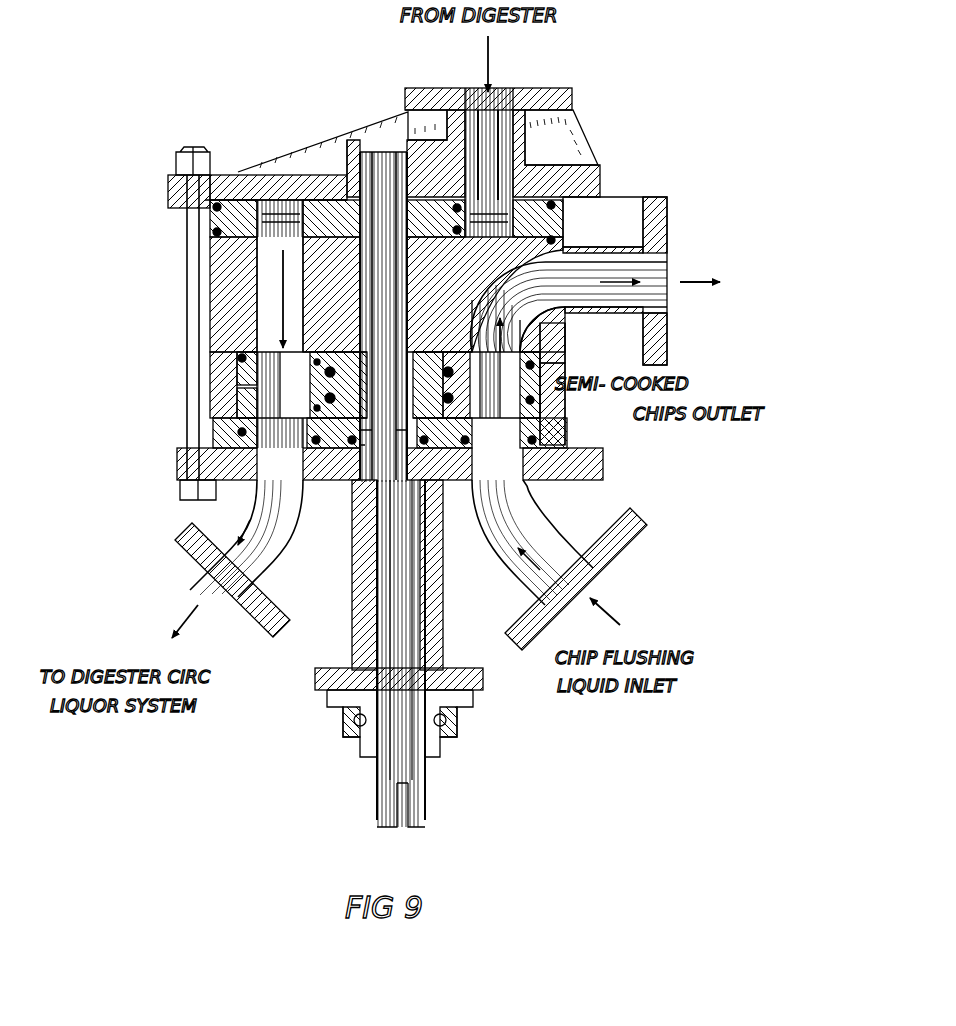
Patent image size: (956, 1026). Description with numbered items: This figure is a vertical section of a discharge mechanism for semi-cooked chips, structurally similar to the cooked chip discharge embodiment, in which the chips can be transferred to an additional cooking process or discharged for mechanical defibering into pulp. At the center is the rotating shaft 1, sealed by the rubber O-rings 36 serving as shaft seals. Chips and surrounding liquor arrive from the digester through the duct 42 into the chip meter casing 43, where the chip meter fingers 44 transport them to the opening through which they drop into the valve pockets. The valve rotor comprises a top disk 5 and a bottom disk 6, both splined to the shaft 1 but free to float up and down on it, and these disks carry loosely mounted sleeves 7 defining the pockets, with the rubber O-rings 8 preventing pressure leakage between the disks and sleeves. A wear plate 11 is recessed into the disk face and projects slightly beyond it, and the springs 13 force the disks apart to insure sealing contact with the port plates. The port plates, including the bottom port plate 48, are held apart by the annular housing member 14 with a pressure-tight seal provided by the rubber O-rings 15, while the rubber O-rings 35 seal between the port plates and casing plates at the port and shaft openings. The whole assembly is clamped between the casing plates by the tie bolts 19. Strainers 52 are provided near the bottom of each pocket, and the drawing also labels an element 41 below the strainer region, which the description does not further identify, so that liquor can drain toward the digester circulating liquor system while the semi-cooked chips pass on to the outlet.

The rotating shaft 1 is at (428, 793).
The top disk or plate 5 is at (552, 345).
The bottom disk or plate 6 is at (550, 378).
The sleeves 7 is at (455, 397).
The rubber O-rings 8 is at (548, 403).
The wear plate 11 is at (242, 360).
The springs 13 is at (340, 345).
The annular housing member 14 is at (225, 411).
The rubber O-rings 15 is at (238, 356).
The tie bolts 19 is at (187, 246).
The rubber O-rings 35 is at (256, 558).
The rubber O-rings 36 is at (372, 442).
The passage 41 is at (280, 433).
The duct 42 is at (528, 133).
The chip meter casing 43 is at (565, 219).
The chip meter fingers 44 is at (497, 205).
The bottom port plate 48 is at (562, 433).
The strainers 52 is at (147, 380).